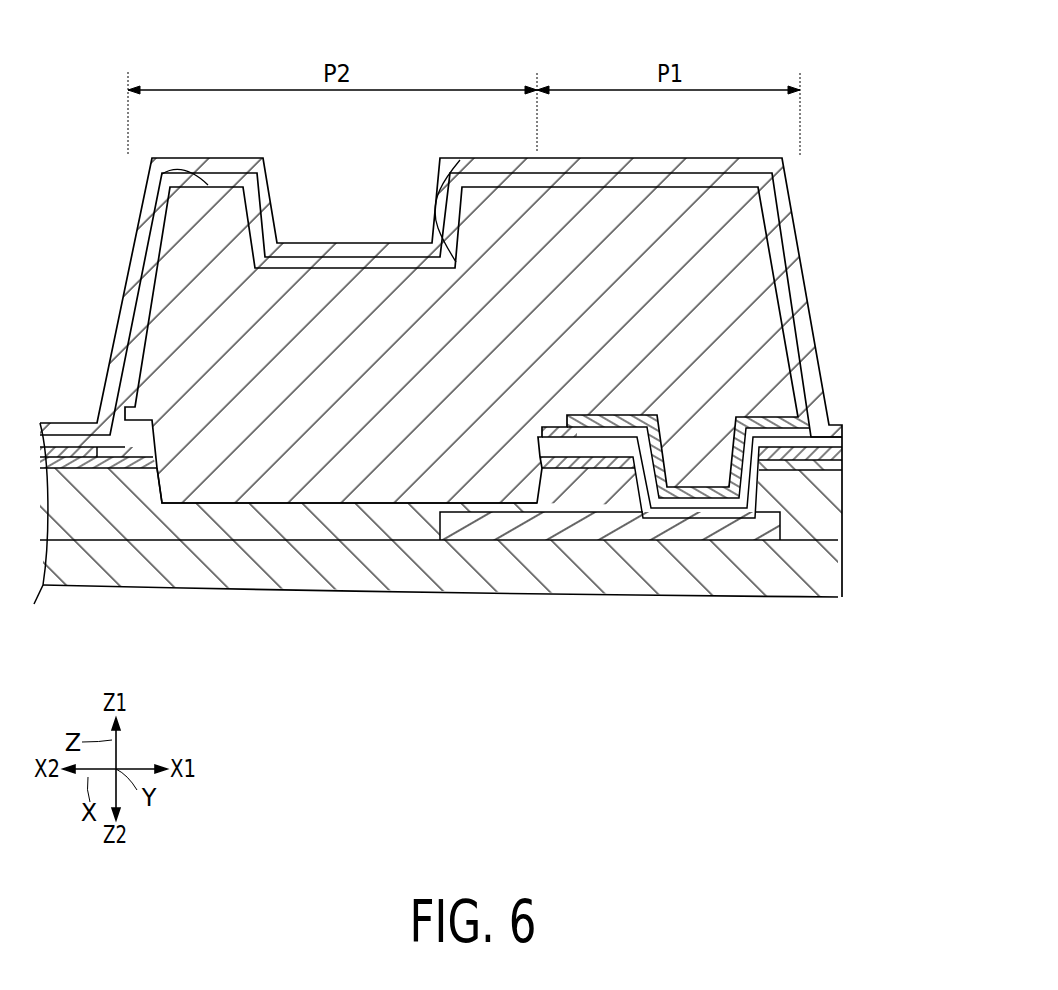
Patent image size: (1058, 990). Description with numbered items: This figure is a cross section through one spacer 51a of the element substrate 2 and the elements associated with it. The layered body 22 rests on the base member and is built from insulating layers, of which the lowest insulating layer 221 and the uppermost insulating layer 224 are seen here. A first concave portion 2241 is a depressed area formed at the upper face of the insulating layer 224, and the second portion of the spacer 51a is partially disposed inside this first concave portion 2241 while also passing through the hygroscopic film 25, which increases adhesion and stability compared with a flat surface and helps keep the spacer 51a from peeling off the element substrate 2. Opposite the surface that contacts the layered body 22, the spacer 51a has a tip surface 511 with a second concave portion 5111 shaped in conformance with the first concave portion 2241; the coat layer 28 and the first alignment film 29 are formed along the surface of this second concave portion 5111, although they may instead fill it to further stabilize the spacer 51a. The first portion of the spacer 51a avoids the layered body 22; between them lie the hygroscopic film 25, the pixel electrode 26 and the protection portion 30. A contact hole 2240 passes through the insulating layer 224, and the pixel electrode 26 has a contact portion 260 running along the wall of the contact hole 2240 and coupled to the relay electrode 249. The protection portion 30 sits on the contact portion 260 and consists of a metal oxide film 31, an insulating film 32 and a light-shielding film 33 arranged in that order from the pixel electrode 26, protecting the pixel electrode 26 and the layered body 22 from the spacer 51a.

The element substrate 2 is at (75, 418).
The layered body 22 is at (441, 580).
The insulating layer 221 is at (770, 568).
The insulating layer 224 is at (810, 523).
The contact hole 2240 is at (645, 522).
The first concave portion 2241 is at (178, 487).
The relay electrode 249 is at (540, 530).
The hygroscopic film 25 is at (827, 461).
The pixel electrode 26 is at (845, 456).
The contact portion 260 is at (757, 502).
The coat layer 28 is at (770, 223).
The first alignment film 29 is at (787, 192).
The protection portion 30 is at (725, 402).
The metal oxide film 31 is at (756, 442).
The insulating film 32 is at (748, 422).
The light-shielding film 33 is at (754, 411).
The spacer 51a is at (742, 277).
The tip surface 511 is at (152, 174).
The second concave portion 5111 is at (459, 162).